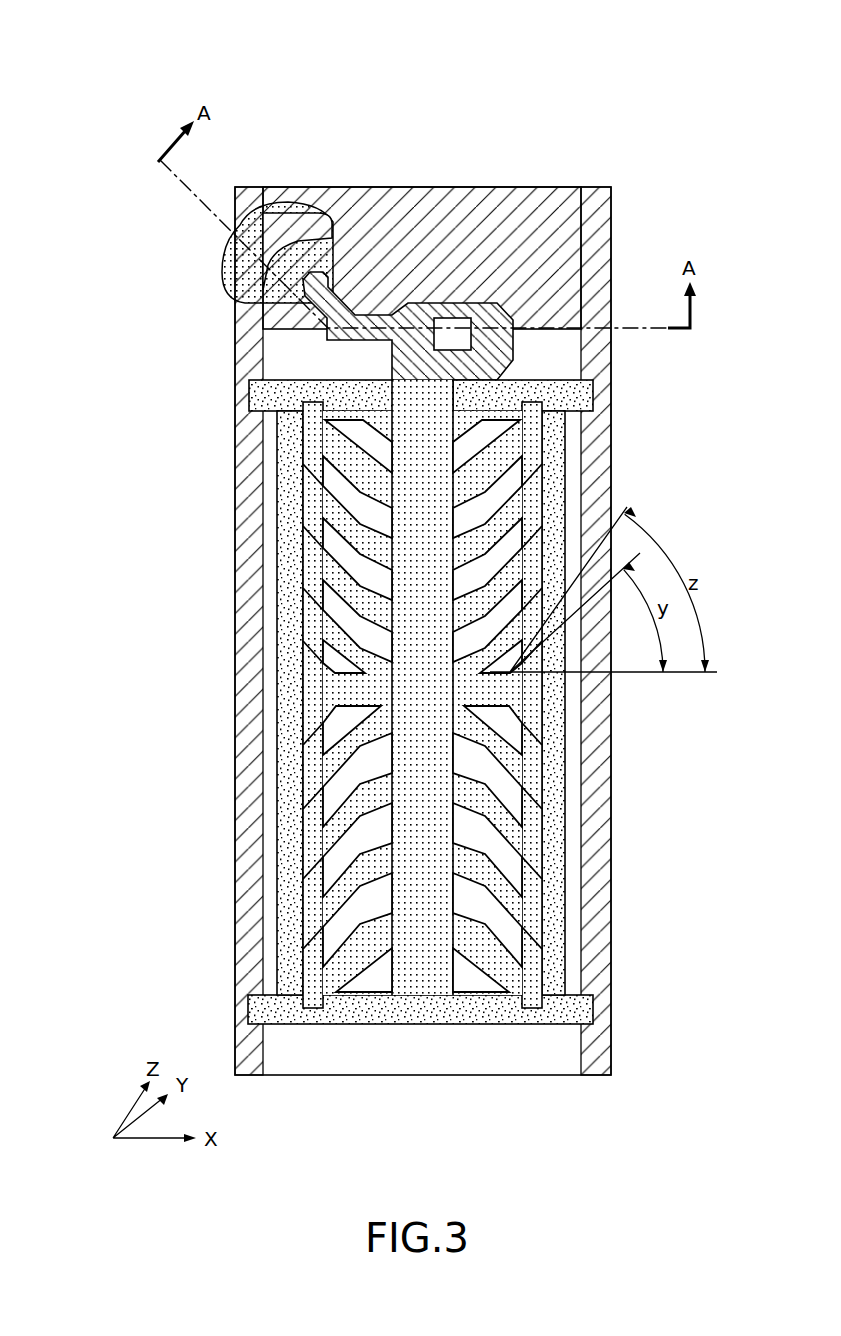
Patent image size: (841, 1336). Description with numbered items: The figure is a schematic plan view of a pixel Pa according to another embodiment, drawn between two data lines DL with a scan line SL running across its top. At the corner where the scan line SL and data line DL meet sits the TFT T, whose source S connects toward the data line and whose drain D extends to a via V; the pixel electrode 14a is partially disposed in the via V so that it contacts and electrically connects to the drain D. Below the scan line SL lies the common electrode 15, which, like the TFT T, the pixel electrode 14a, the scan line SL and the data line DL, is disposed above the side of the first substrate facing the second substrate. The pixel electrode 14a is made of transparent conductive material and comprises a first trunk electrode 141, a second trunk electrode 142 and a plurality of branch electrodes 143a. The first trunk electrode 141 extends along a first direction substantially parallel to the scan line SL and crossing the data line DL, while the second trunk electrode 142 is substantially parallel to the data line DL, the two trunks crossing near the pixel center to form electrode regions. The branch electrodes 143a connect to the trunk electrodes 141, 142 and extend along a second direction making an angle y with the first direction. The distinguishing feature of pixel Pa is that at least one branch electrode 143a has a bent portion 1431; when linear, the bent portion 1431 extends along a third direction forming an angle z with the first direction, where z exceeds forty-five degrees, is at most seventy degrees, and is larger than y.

The common electrode 15 is at (262, 393).
The pixel electrode 14a is at (296, 481).
The branch electrodes 143a is at (535, 423).
The bent portion 1431 is at (305, 600).
The first trunk electrode 141 is at (316, 692).
The second trunk electrode 142 is at (428, 997).
The data line DL is at (250, 916).
The scan line SL is at (556, 205).
The source S is at (302, 212).
The drain D is at (327, 328).
The TFT T is at (225, 268).
The via V is at (452, 318).
The pixel Pa is at (120, 44).